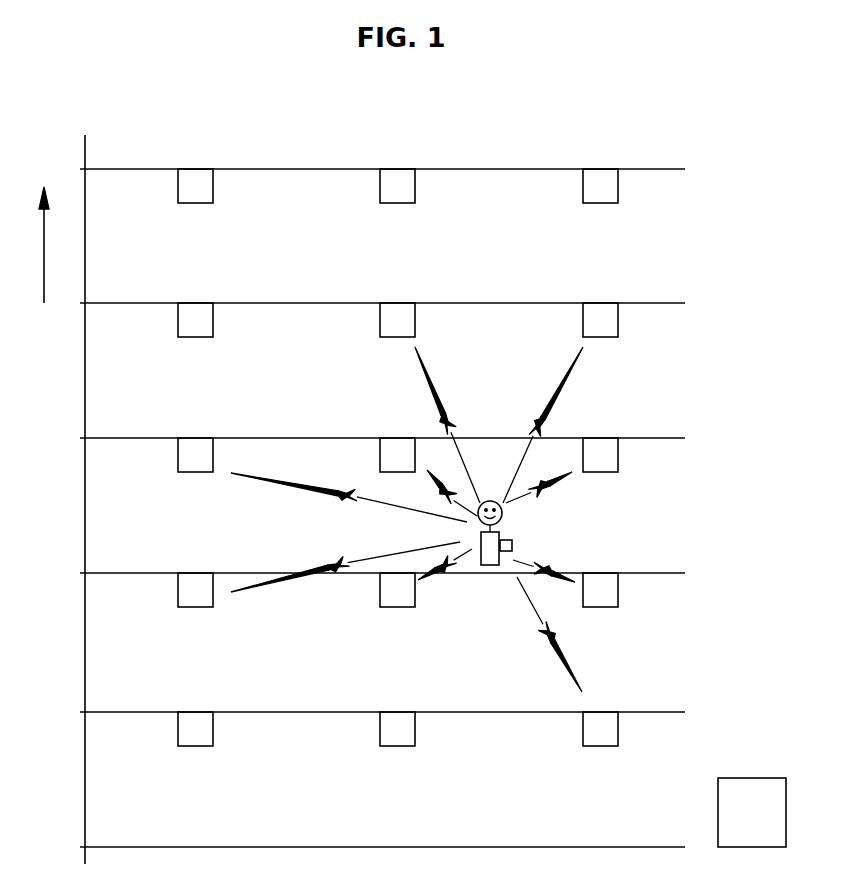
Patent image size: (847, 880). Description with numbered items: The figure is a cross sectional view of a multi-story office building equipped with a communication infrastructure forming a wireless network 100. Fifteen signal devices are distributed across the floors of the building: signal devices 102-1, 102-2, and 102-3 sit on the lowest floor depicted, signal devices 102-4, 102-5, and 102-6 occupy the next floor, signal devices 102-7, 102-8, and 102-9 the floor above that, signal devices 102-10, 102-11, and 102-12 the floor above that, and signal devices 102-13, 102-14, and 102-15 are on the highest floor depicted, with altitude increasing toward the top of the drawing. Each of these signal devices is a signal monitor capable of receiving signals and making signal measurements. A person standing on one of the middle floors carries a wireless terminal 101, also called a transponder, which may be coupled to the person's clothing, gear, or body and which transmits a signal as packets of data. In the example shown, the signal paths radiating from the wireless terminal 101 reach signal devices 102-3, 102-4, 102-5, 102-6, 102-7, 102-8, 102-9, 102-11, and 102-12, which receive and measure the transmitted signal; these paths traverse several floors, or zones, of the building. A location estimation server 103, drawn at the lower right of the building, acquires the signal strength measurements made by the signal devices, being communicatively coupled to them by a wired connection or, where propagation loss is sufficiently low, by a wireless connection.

The wireless network 100 is at (402, 98).
The wireless terminal 101 is at (533, 533).
The signal device 102-1 is at (151, 740).
The signal device 102-2 is at (354, 740).
The signal device 102-3 is at (556, 673).
The signal device 102-4 is at (275, 586).
The signal device 102-5 is at (382, 590).
The signal device 102-6 is at (609, 591).
The signal device 102-7 is at (278, 480).
The signal device 102-8 is at (384, 477).
The signal device 102-9 is at (606, 470).
The signal device 102-10 is at (151, 331).
The signal device 102-11 is at (386, 403).
The signal device 102-12 is at (556, 403).
The signal device 102-13 is at (151, 197).
The signal device 102-14 is at (354, 197).
The signal device 102-15 is at (556, 197).
The location estimation server 103 is at (771, 792).